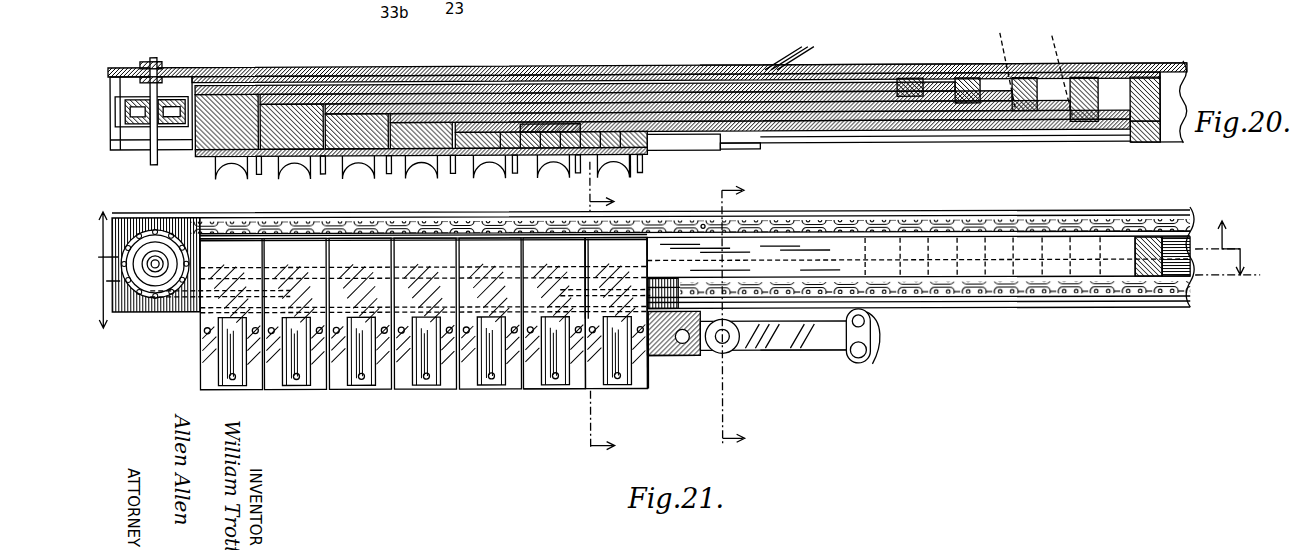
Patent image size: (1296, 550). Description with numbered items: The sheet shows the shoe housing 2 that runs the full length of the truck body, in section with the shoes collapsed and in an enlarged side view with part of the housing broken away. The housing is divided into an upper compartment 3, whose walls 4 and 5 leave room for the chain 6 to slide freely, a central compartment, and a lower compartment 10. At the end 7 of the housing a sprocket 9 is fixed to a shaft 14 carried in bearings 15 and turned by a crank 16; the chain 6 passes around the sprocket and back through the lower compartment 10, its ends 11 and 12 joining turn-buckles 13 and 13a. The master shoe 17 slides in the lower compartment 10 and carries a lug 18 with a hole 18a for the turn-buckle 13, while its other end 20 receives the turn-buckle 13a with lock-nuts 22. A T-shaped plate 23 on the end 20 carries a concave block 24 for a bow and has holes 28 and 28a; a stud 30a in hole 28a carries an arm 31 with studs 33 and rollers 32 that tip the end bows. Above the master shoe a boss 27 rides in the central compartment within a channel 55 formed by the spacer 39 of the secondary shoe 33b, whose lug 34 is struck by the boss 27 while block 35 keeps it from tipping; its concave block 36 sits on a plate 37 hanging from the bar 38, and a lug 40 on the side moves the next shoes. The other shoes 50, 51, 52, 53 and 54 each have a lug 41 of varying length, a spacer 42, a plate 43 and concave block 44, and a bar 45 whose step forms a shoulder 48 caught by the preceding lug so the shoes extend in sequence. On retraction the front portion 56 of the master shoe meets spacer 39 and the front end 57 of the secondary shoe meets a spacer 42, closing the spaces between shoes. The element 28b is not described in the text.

In FIG. 20, the shoe housing 2 is at (722, 67).
In FIG. 21, the shoe housing 2 is at (813, 213).
In FIG. 21, the upper compartment 3 is at (877, 214).
In FIG. 21, the wall 4 is at (940, 213).
In FIG. 21, the wall 5 is at (960, 232).
In FIG. 21, the chain 6 is at (1045, 223).
In FIG. 20, the end of shoe housing 7 is at (127, 80).
In FIG. 21, the end of shoe housing 7 is at (117, 224).
In FIG. 20, the sprocket 9 is at (145, 122).
In FIG. 21, the sprocket 9 is at (162, 281).
In FIG. 21, the lower compartment 10 is at (1000, 300).
In FIG. 21, the chain end 11 is at (190, 308).
In FIG. 21, the chain end 12 is at (690, 288).
In FIG. 21, the turn-buckle 13 is at (205, 338).
In FIG. 21, the turn-buckle 13a is at (682, 292).
In FIG. 20, the shaft 14 is at (153, 60).
In FIG. 21, the shaft 14 is at (156, 260).
In FIG. 20, the bearing 15 is at (160, 64).
In FIG. 21, the crank 16 is at (614, 311).
In FIG. 20, the master shoe 17 is at (640, 163).
In FIG. 21, the master shoe 17 is at (747, 317).
In FIG. 21, the lug 18 is at (256, 235).
In FIG. 21, the hole 18a is at (276, 246).
In FIG. 21, the other end of master shoe 20 is at (670, 258).
In FIG. 21, the lock-nuts 22 is at (676, 367).
In FIG. 20, the plate 23 is at (716, 153).
In FIG. 21, the plate 23 is at (651, 366).
In FIG. 20, the concave block 24 is at (598, 158).
In FIG. 21, the concave block 24 is at (613, 381).
In FIG. 20, the boss 27 is at (650, 151).
In FIG. 21, the hole 28 is at (688, 343).
In FIG. 21, the hole 28a is at (728, 344).
In FIG. 20, the arm 28b is at (1171, 90).
In FIG. 21, the arm 28b is at (921, 253).
In FIG. 21, the stud 30a is at (741, 338).
In FIG. 21, the arm 31 is at (801, 352).
In FIG. 21, the roller 32 is at (870, 324).
In FIG. 21, the stud 33 is at (853, 323).
In FIG. 20, the secondary shoe 33b is at (537, 160).
In FIG. 21, the secondary shoe 33b is at (530, 392).
In FIG. 20, the lug 34 is at (1148, 148).
In FIG. 20, the block 35 is at (1140, 82).
In FIG. 20, the concave block 36 is at (560, 160).
In FIG. 20, the plate 37 is at (528, 150).
In FIG. 21, the plate 37 is at (583, 244).
In FIG. 20, the bar 38 is at (590, 108).
In FIG. 20, the spacer 39 is at (551, 110).
In FIG. 20, the lug 40 is at (553, 83).
In FIG. 20, the lug 41 is at (910, 82).
In FIG. 20, the spacer 42 is at (488, 60).
In FIG. 20, the plate 43 is at (258, 171).
In FIG. 20, the concave block 44 is at (232, 172).
In FIG. 21, the concave block 44 is at (467, 389).
In FIG. 20, the bar 45 is at (794, 50).
In FIG. 20, the shoulder 48 is at (1031, 65).
In FIG. 20, the shoe 50 is at (255, 70).
In FIG. 20, the shoe 51 is at (305, 79).
In FIG. 20, the shoe 52 is at (352, 90).
In FIG. 20, the shoe 53 is at (420, 98).
In FIG. 20, the shoe 54 is at (505, 112).
In FIG. 20, the channel 55 is at (805, 141).
In FIG. 20, the front portion 56 is at (612, 160).
In FIG. 20, the front end 57 is at (508, 160).